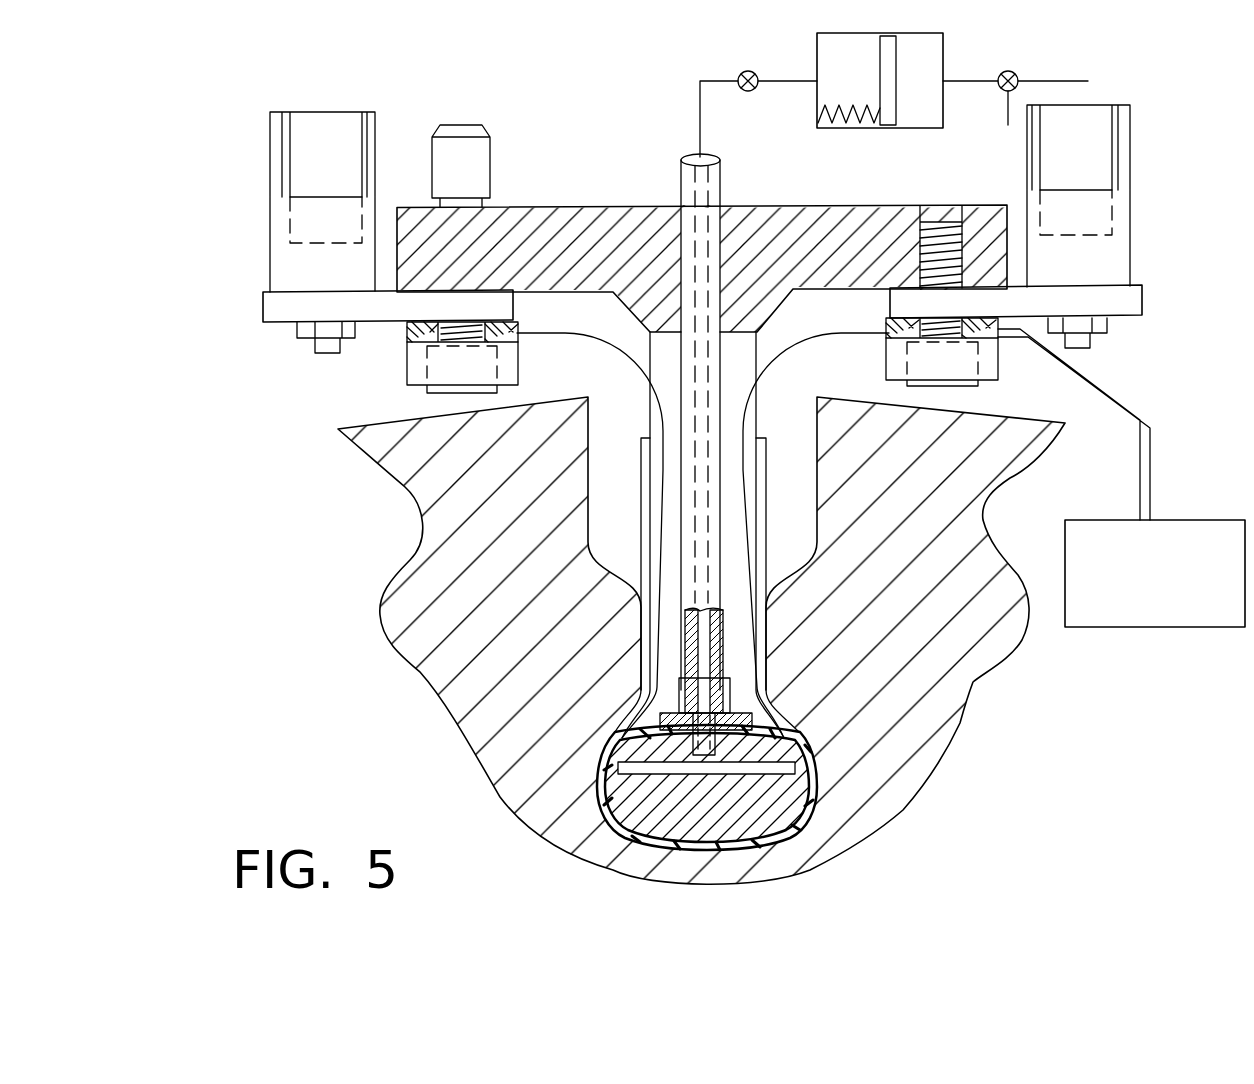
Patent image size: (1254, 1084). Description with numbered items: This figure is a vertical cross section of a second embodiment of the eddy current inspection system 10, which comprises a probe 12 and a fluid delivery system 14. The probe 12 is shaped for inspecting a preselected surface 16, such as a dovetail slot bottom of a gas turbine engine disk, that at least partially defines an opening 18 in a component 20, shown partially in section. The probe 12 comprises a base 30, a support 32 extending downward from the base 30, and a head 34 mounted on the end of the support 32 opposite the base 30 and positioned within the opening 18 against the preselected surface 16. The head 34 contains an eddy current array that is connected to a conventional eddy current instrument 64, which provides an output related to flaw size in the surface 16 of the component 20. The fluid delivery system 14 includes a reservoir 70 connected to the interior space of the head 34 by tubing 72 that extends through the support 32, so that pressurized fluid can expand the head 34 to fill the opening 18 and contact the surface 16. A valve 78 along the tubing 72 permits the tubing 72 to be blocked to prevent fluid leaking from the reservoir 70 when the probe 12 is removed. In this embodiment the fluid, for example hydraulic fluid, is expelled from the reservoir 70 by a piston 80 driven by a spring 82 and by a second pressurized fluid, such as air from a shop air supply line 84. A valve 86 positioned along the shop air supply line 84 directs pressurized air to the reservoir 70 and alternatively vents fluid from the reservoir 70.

The eddy current inspection system 10 is at (593, 138).
The probe 12 is at (632, 561).
The fluid delivery system 14 is at (918, 102).
The preselected surface 16 is at (600, 785).
The opening 18 is at (613, 460).
The component 20 is at (380, 618).
The base 30 is at (900, 206).
The support 32 is at (757, 348).
The head 34 is at (598, 807).
The eddy current instrument 64 is at (1172, 590).
The reservoir 70 is at (920, 128).
The tubing 72 is at (722, 185).
The valve 78 is at (757, 89).
The piston 80 is at (893, 52).
The spring 82 is at (833, 130).
The shop air supply line 84 is at (1075, 80).
The valve 86 is at (1016, 72).